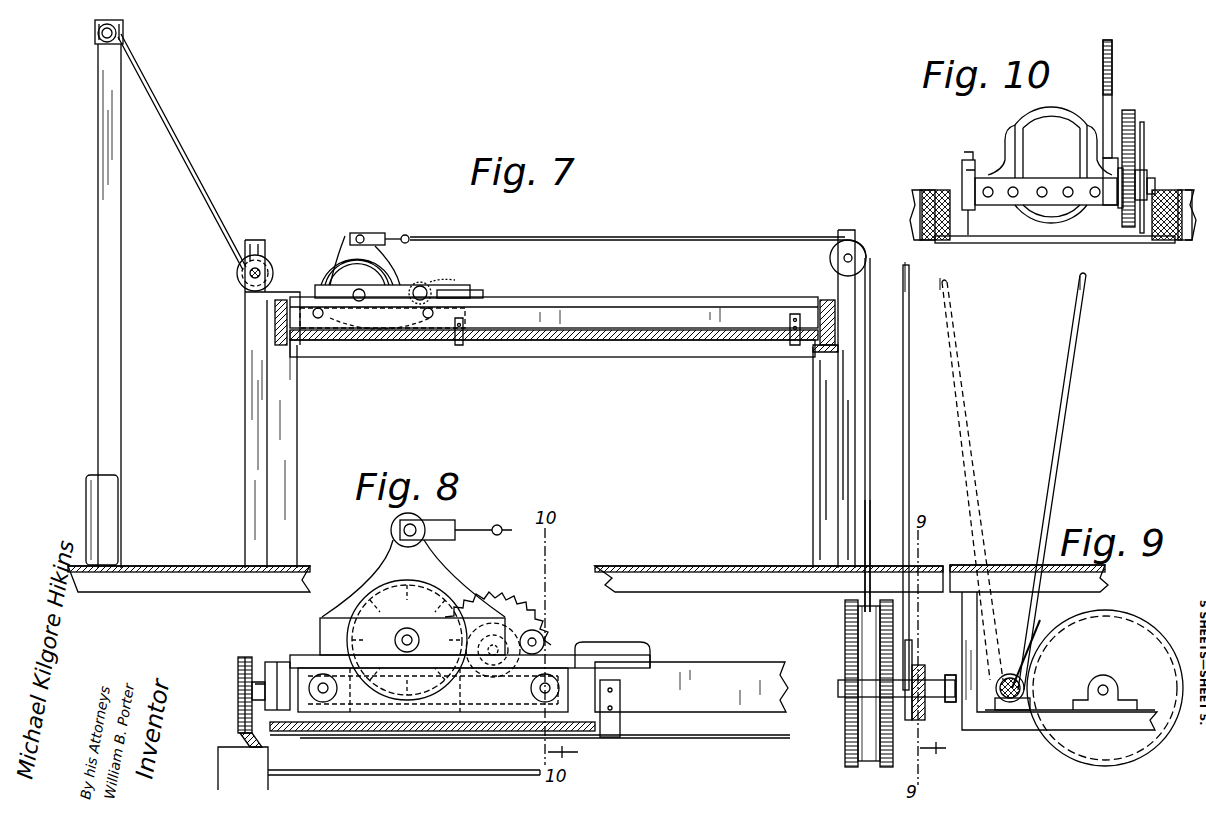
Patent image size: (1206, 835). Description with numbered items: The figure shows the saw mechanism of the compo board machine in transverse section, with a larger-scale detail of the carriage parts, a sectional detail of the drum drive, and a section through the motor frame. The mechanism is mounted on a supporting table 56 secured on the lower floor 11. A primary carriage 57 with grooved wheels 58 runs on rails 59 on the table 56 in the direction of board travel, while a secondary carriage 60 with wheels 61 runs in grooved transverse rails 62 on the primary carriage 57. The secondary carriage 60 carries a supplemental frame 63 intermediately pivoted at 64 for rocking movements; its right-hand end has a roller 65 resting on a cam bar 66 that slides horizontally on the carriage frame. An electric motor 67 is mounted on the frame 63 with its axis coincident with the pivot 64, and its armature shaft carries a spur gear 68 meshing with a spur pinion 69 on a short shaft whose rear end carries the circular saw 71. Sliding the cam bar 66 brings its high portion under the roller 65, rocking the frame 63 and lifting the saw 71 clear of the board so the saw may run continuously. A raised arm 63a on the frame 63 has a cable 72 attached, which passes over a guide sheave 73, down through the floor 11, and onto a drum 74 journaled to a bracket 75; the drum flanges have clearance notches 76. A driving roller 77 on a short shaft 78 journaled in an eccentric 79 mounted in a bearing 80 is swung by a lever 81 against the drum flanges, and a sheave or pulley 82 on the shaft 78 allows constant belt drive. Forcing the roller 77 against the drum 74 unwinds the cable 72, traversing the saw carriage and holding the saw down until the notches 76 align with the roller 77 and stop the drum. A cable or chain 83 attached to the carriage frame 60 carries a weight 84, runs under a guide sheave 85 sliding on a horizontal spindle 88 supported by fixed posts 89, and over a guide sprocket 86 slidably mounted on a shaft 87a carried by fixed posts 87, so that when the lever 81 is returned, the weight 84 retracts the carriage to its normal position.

In FIG. 8, the lower floor 11 is at (793, 574).
In FIG. 9, the lower floor 11 is at (1107, 584).
In FIG. 7, the supporting table 56 is at (548, 342).
In FIG. 8, the supporting table 56 is at (660, 732).
In FIG. 7, the primary carriage 57 is at (636, 312).
In FIG. 8, the primary carriage 57 is at (278, 668).
In FIG. 10, the primary carriage 57 is at (912, 206).
In FIG. 7, the grooved wheels 58 is at (274, 322).
In FIG. 8, the grooved wheels 58 is at (245, 658).
In FIG. 7, the rails 59 is at (820, 350).
In FIG. 8, the rails 59 is at (248, 746).
In FIG. 7, the secondary carriage 60 is at (382, 324).
In FIG. 8, the secondary carriage 60 is at (500, 700).
In FIG. 10, the secondary carriage 60 is at (982, 244).
In FIG. 7, the wheels 61 is at (318, 322).
In FIG. 8, the wheels 61 is at (322, 704).
In FIG. 10, the wheels 61 is at (936, 196).
In FIG. 7, the grooved transverse rails 62 is at (488, 311).
In FIG. 8, the grooved transverse rails 62 is at (578, 692).
In FIG. 10, the grooved transverse rails 62 is at (926, 242).
In FIG. 7, the supplemental frame 63 is at (328, 292).
In FIG. 8, the supplemental frame 63 is at (412, 636).
In FIG. 10, the supplemental frame 63 is at (1052, 202).
In FIG. 7, the raised arm 63a is at (353, 224).
In FIG. 8, the raised arm 63a is at (428, 570).
In FIG. 10, the raised arm 63a is at (1102, 96).
In FIG. 7, the pivot 64 is at (365, 293).
In FIG. 8, the pivot 64 is at (400, 642).
In FIG. 10, the pivot 64 is at (964, 166).
In FIG. 7, the roller 65 is at (426, 289).
In FIG. 8, the roller 65 is at (540, 634).
In FIG. 7, the cam bar 66 is at (480, 290).
In FIG. 8, the cam bar 66 is at (300, 655).
In FIG. 8, the electric motor 67 is at (393, 598).
In FIG. 10, the electric motor 67 is at (1050, 165).
In FIG. 10, the spur gear 68 is at (1129, 112).
In FIG. 8, the spur pinion 69 is at (492, 626).
In FIG. 10, the spur pinion 69 is at (1126, 206).
In FIG. 7, the circular saw 71 is at (437, 290).
In FIG. 8, the circular saw 71 is at (512, 598).
In FIG. 10, the circular saw 71 is at (1144, 162).
In FIG. 7, the cable 72 is at (571, 237).
In FIG. 8, the cable 72 is at (505, 528).
In FIG. 7, the guide sheave 73 is at (832, 258).
In FIG. 8, the drum 74 is at (850, 722).
In FIG. 9, the drum 74 is at (1105, 688).
In FIG. 9, the bracket 75 is at (970, 642).
In FIG. 9, the clearance notches 76 is at (1043, 738).
In FIG. 8, the driving roller 77 is at (848, 690).
In FIG. 9, the driving roller 77 is at (1030, 702).
In FIG. 9, the short shaft 78 is at (930, 690).
In FIG. 8, the eccentric 79 is at (908, 720).
In FIG. 9, the eccentric 79 is at (1018, 670).
In FIG. 8, the bearing 80 is at (922, 722).
In FIG. 9, the bearing 80 is at (1006, 700).
In FIG. 8, the lever 81 is at (909, 514).
In FIG. 9, the lever 81 is at (1040, 521).
In FIG. 9, the sheave or pulley 82 is at (955, 676).
In FIG. 7, the cable or chain 83 is at (208, 224).
In FIG. 7, the weight 84 is at (104, 522).
In FIG. 7, the guide sheave 85 is at (273, 280).
In FIG. 7, the guide sprocket 86 is at (100, 45).
In FIG. 7, the fixed posts 87 is at (116, 216).
In FIG. 7, the shaft 87a is at (97, 40).
In FIG. 7, the horizontal spindle 88 is at (240, 292).
In FIG. 7, the fixed posts 89 is at (250, 376).